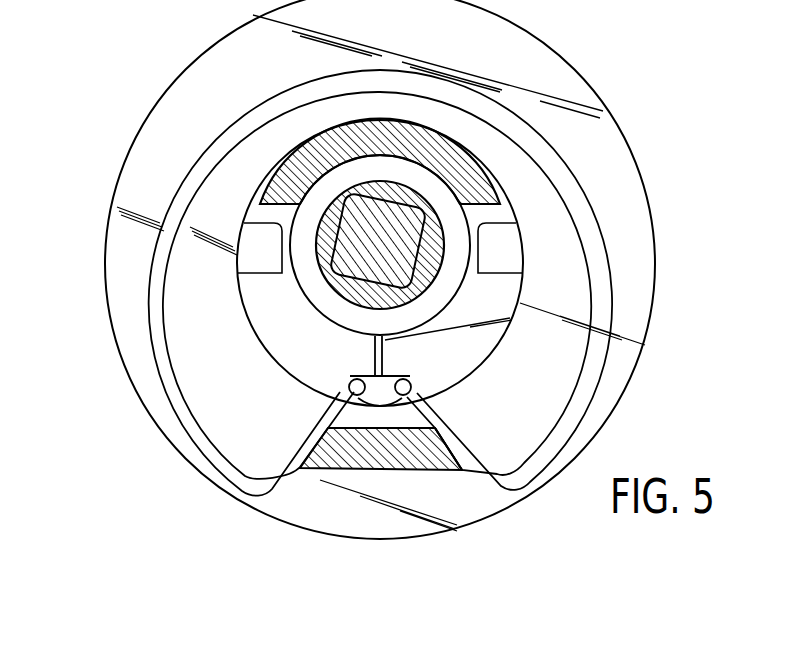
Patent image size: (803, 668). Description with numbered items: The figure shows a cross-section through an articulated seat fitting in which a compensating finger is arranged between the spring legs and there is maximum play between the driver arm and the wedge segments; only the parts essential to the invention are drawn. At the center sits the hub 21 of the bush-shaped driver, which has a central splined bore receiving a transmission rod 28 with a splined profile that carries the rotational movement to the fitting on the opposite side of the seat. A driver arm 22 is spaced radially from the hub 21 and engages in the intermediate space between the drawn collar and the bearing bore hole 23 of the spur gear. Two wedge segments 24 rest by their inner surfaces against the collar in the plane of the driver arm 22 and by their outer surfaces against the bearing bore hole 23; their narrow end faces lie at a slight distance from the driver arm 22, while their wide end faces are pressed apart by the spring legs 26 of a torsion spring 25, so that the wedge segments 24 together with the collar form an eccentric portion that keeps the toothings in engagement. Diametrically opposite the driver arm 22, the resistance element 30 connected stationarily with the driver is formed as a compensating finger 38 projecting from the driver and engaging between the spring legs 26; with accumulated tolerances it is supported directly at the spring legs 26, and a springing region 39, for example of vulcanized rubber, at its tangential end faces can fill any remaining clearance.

The hub 21 is at (328, 246).
The driver arm 22 is at (438, 150).
The bearing bore hole 23 is at (513, 203).
The wedge segments 24 is at (337, 340).
The torsion spring 25 is at (583, 213).
The spring legs 26 is at (312, 434).
The transmission rod 28 is at (373, 253).
The resistance element 30 is at (366, 472).
The compensating finger 38 is at (401, 462).
The springing region 39 is at (449, 470).